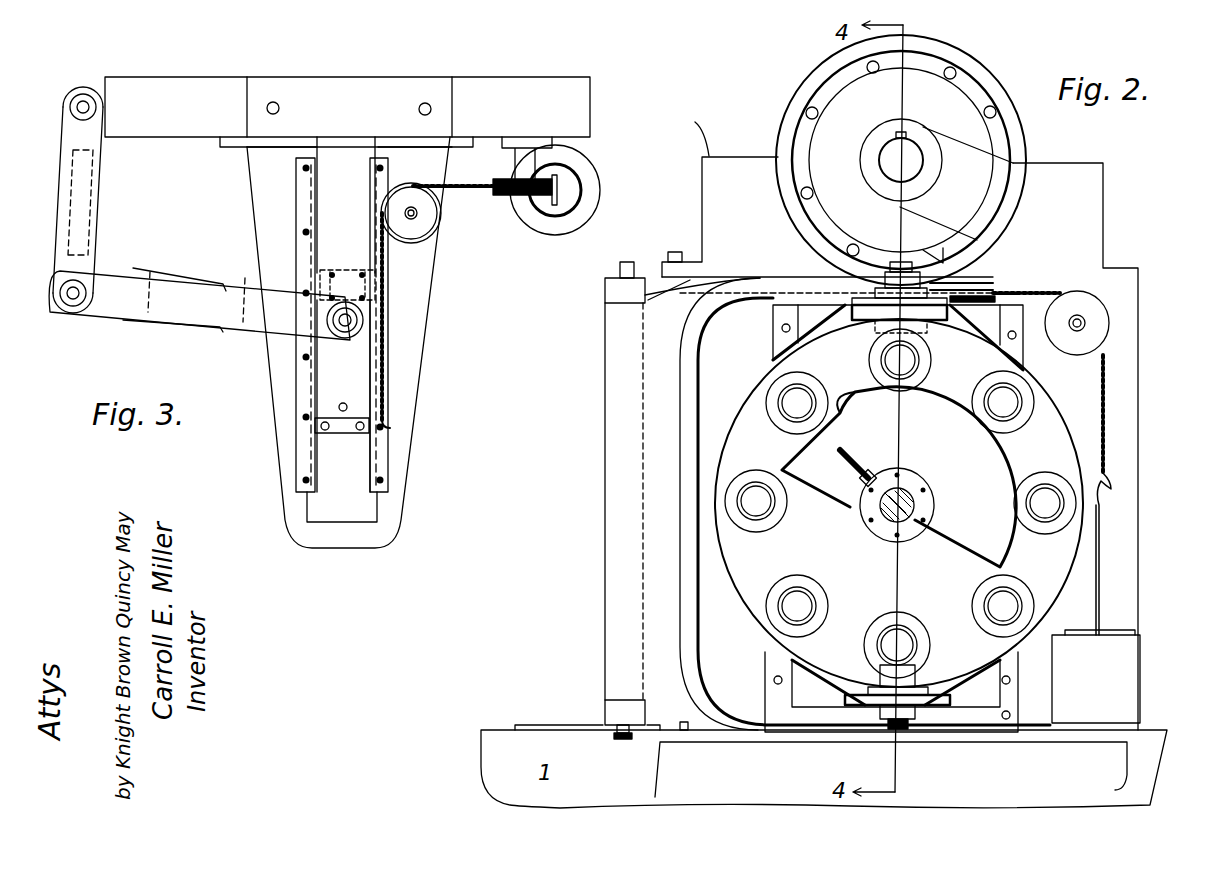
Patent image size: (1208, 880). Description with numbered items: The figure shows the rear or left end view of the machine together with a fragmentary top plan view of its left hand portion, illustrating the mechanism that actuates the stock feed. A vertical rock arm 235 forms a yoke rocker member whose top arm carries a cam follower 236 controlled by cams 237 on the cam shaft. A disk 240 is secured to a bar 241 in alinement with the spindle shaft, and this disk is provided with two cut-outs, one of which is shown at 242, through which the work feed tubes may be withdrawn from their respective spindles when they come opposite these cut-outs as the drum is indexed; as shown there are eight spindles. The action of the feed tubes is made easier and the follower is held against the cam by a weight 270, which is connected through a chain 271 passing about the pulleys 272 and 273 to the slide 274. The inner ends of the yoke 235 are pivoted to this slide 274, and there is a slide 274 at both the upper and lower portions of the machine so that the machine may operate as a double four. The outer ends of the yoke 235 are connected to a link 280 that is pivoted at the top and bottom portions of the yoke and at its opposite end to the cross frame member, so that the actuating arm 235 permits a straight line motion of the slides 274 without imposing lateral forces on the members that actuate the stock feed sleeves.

In FIG. 3, the rock arm 235 is at (232, 296).
In FIG. 2, the rock arm 235 is at (618, 403).
In FIG. 3, the cam follower 236 is at (365, 320).
In FIG. 2, the cam follower 236 is at (848, 266).
In FIG. 2, the cams 237 is at (1010, 210).
In FIG. 2, the disk 240 is at (899, 477).
In FIG. 2, the bar 241 is at (880, 515).
In FIG. 2, the cut-out 242 is at (840, 410).
In FIG. 3, the weight 270 is at (565, 222).
In FIG. 2, the weight 270 is at (1096, 676).
In FIG. 3, the chain 271 is at (476, 190).
In FIG. 2, the chain 271 is at (1108, 385).
In FIG. 3, the pulley 272 is at (508, 198).
In FIG. 2, the pulley 272 is at (1100, 323).
In FIG. 3, the pulley 273 is at (425, 232).
In FIG. 2, the pulley 273 is at (990, 287).
In FIG. 3, the slide 274 is at (342, 396).
In FIG. 2, the slide 274 is at (798, 305).
In FIG. 3, the link 280 is at (88, 225).
In FIG. 2, the link 280 is at (607, 292).